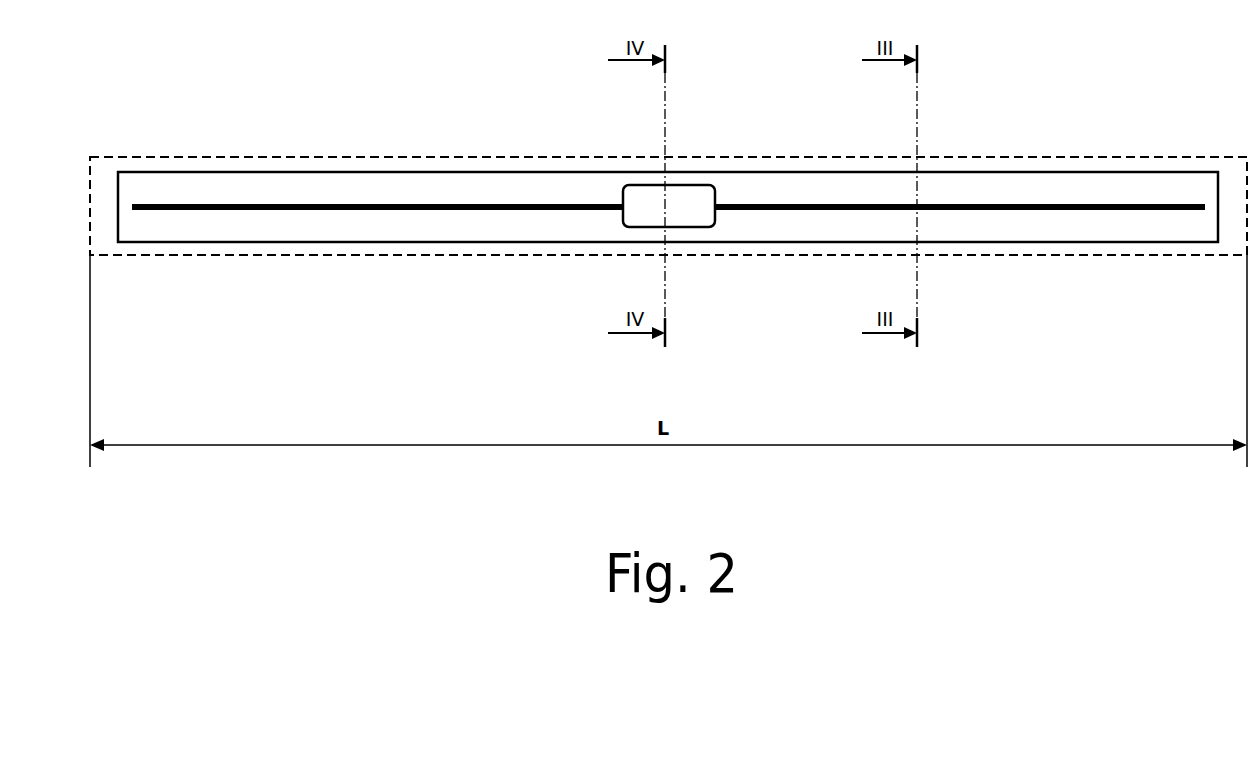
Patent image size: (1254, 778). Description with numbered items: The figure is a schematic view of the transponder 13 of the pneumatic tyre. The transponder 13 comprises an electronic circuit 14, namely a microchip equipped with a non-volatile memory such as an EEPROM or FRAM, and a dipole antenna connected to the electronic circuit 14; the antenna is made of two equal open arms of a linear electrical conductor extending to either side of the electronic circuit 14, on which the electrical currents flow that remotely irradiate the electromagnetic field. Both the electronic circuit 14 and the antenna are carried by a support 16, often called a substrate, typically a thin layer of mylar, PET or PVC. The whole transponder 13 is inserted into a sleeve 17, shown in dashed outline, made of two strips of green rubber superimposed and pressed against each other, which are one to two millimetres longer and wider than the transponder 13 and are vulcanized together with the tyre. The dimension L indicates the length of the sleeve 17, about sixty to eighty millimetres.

The transponder 13 is at (278, 87).
The electronic circuit 14 is at (693, 203).
The support 16 is at (322, 220).
The sleeve 17 is at (202, 292).